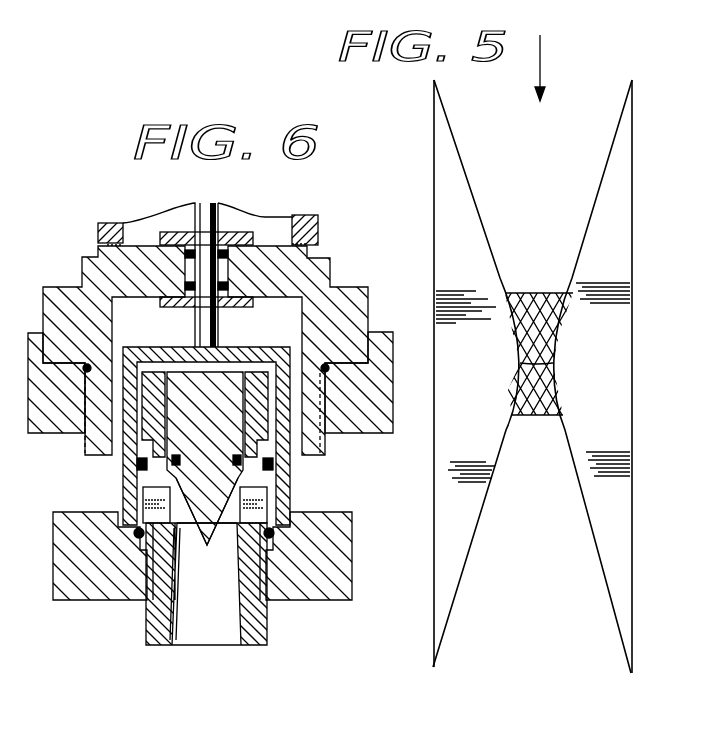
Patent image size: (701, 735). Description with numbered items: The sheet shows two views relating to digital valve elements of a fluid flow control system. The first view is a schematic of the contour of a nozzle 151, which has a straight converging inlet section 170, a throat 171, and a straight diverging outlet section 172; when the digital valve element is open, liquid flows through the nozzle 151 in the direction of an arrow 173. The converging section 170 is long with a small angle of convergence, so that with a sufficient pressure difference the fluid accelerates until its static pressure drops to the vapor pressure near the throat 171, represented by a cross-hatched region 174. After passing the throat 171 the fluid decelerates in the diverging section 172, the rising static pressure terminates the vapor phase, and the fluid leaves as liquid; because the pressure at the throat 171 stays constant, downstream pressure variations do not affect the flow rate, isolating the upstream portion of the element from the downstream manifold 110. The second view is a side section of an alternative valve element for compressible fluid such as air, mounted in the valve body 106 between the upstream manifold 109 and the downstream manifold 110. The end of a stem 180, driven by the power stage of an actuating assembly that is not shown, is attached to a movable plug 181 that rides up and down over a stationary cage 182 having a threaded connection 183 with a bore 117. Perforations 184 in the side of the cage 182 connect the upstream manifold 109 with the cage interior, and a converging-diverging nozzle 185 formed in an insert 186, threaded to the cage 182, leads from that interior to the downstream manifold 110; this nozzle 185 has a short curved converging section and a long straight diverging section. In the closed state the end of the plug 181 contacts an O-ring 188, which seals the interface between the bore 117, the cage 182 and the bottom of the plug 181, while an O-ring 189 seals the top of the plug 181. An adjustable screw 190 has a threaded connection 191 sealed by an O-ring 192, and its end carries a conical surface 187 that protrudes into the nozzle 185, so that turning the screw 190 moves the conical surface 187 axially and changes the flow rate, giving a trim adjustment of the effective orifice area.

In FIG. 6, the valve body 106 is at (24, 326).
In FIG. 6, the upstream manifold 109 is at (73, 508).
In FIG. 6, the downstream manifold 110 is at (212, 674).
In FIG. 6, the bore 117 is at (76, 287).
In FIG. 5, the nozzle 151 is at (607, 240).
In FIG. 5, the converging inlet section 170 is at (607, 174).
In FIG. 5, the throat 171 is at (552, 362).
In FIG. 5, the diverging outlet section 172 is at (473, 547).
In FIG. 5, the arrow 173 is at (542, 70).
In FIG. 5, the cross-hatched region 174 is at (520, 345).
In FIG. 6, the stem 180 is at (223, 217).
In FIG. 6, the movable plug 181 is at (296, 345).
In FIG. 6, the stationary cage 182 is at (257, 390).
In FIG. 6, the threaded connection 183 is at (140, 548).
In FIG. 6, the perforations 184 is at (143, 495).
In FIG. 6, the converging-diverging nozzle 185 is at (174, 608).
In FIG. 6, the insert 186 is at (258, 647).
In FIG. 6, the needle tip 187 is at (160, 560).
In FIG. 6, the O-ring 188 is at (138, 535).
In FIG. 6, the O-ring 189 is at (137, 463).
In FIG. 6, the adjustable screw 190 is at (185, 347).
In FIG. 6, the threaded connection 191 is at (150, 400).
In FIG. 6, the O-ring 192 is at (265, 478).